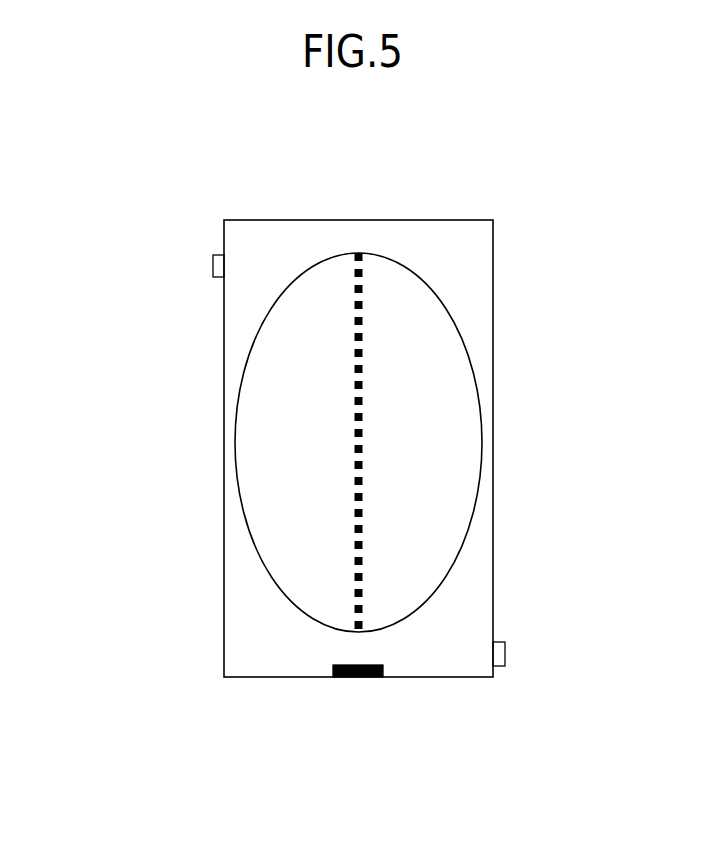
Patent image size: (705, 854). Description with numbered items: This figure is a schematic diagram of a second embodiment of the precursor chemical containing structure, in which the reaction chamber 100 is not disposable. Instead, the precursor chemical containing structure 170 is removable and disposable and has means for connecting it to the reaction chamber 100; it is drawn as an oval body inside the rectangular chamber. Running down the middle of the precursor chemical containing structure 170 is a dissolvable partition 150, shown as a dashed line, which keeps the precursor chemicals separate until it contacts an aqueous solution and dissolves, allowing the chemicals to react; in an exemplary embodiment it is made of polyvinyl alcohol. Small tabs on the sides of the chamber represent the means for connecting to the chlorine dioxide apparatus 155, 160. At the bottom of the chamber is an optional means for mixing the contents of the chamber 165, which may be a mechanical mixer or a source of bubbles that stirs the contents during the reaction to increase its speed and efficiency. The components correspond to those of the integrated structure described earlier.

The reaction chamber 100 is at (532, 357).
The dissolvable partition 150 is at (370, 298).
The means for connecting to the chlorine dioxide apparatus 155 is at (212, 255).
The means for connecting to the chlorine dioxide apparatus 160 is at (517, 653).
The means for mixing the contents of the chamber 165 is at (310, 688).
The precursor chemical containing structure 170 is at (272, 575).